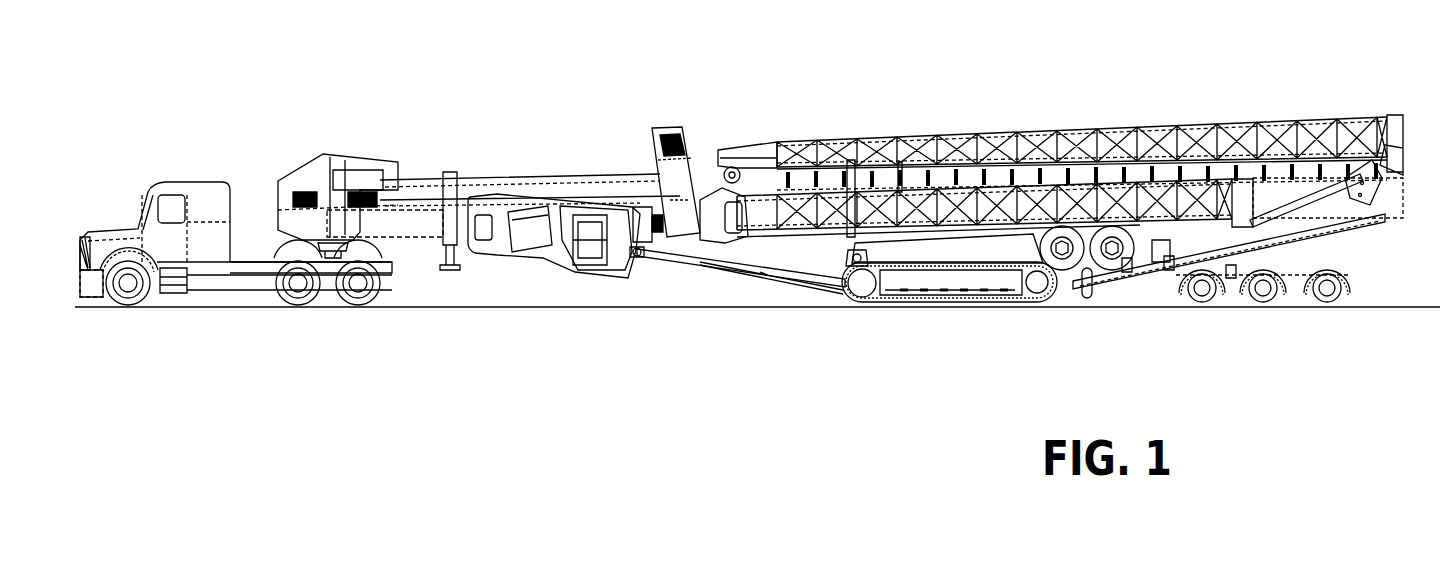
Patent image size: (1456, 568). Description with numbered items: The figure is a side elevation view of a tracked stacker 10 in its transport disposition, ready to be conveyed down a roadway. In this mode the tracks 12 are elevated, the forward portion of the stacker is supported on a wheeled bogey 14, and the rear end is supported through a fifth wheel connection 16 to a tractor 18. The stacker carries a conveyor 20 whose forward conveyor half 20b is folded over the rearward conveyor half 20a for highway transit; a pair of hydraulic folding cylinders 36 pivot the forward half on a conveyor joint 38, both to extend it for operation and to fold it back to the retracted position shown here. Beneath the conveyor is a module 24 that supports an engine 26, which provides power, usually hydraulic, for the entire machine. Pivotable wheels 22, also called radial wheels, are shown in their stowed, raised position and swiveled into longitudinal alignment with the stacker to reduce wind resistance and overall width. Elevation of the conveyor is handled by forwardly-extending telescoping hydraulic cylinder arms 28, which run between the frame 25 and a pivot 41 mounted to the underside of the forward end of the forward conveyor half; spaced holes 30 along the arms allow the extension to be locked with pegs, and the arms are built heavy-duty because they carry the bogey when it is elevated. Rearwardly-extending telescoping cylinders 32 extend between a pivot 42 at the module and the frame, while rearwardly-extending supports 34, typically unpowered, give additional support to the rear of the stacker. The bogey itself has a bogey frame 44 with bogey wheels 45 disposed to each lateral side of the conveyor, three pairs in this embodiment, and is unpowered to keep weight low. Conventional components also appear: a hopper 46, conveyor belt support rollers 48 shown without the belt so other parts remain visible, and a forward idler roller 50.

The tracked stacker 10 is at (958, 84).
The tracks 12 is at (937, 302).
The wheeled bogey 14 is at (1354, 258).
The fifth wheel connection 16 is at (329, 253).
The tractor 18 is at (185, 183).
The conveyor 20 is at (790, 140).
The rearward conveyor half 20a is at (1185, 225).
The forward conveyor half 20b is at (1055, 130).
The pivotable wheels 22 is at (1112, 268).
The module 24 is at (546, 258).
The frame 25 is at (858, 264).
The engine 26 is at (590, 250).
The telescoping hydraulic cylinder arms 28 is at (1160, 262).
The spaced holes 30 is at (1169, 266).
The rearwardly-extending telescoping cylinders 32 is at (717, 272).
The rearwardly-extending supports 34 is at (763, 252).
The hydraulic folding cylinders 36 is at (1318, 200).
The conveyor joint 38 is at (1402, 172).
The pivot 41 is at (1388, 225).
The pivot 42 is at (637, 257).
The bogey frame 44 is at (1231, 278).
The bogey wheels 45 is at (1327, 304).
The hopper 46 is at (356, 152).
The conveyor belt support rollers 48 is at (900, 190).
The forward idler roller 50 is at (720, 170).